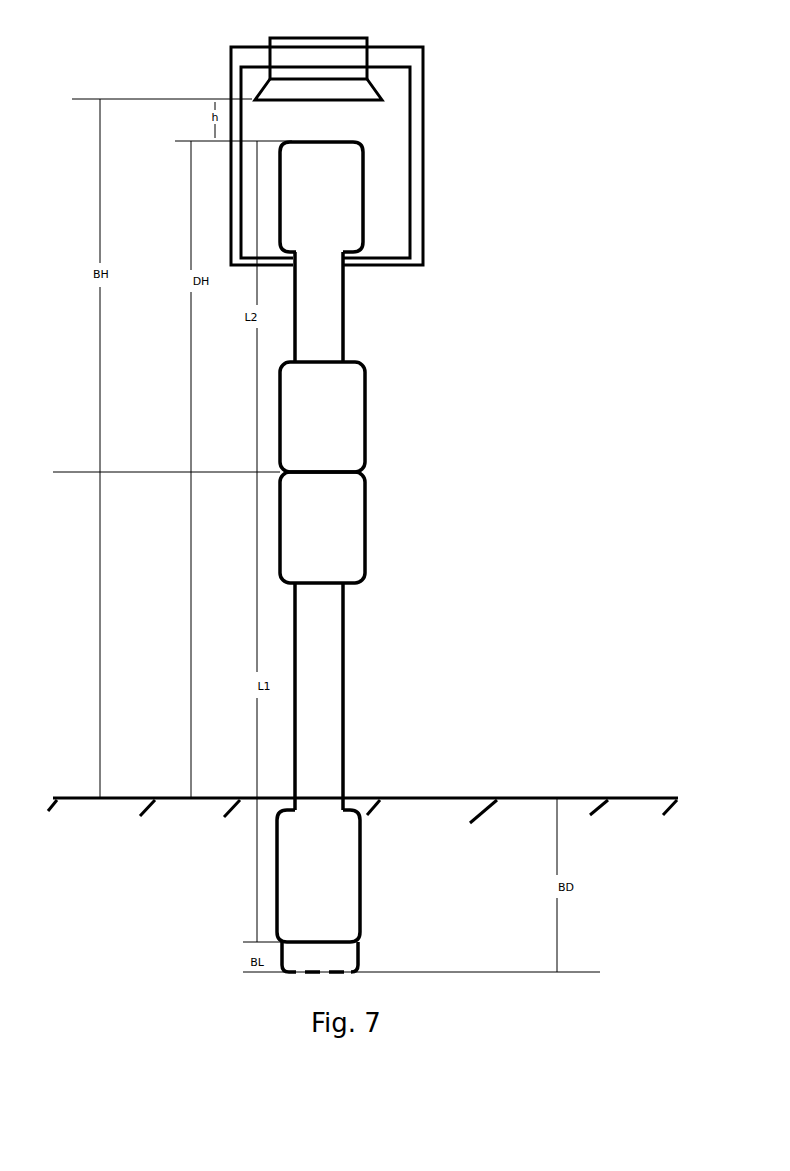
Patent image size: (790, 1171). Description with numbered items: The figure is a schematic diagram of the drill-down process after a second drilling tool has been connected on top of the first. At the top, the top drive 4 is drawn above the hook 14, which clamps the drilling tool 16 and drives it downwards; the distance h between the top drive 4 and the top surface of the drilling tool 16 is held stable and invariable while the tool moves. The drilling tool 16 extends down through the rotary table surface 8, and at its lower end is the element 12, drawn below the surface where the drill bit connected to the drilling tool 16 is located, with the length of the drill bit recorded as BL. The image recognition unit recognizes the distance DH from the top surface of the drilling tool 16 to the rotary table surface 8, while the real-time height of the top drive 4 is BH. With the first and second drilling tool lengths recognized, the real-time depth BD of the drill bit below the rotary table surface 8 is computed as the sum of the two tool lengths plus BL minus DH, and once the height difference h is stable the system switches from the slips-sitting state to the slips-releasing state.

The top drive 4 is at (375, 92).
The rotary table surface 8 is at (622, 797).
The base / foot 12 is at (358, 955).
The hook 14 is at (423, 213).
The drilling tool 16 is at (370, 177).